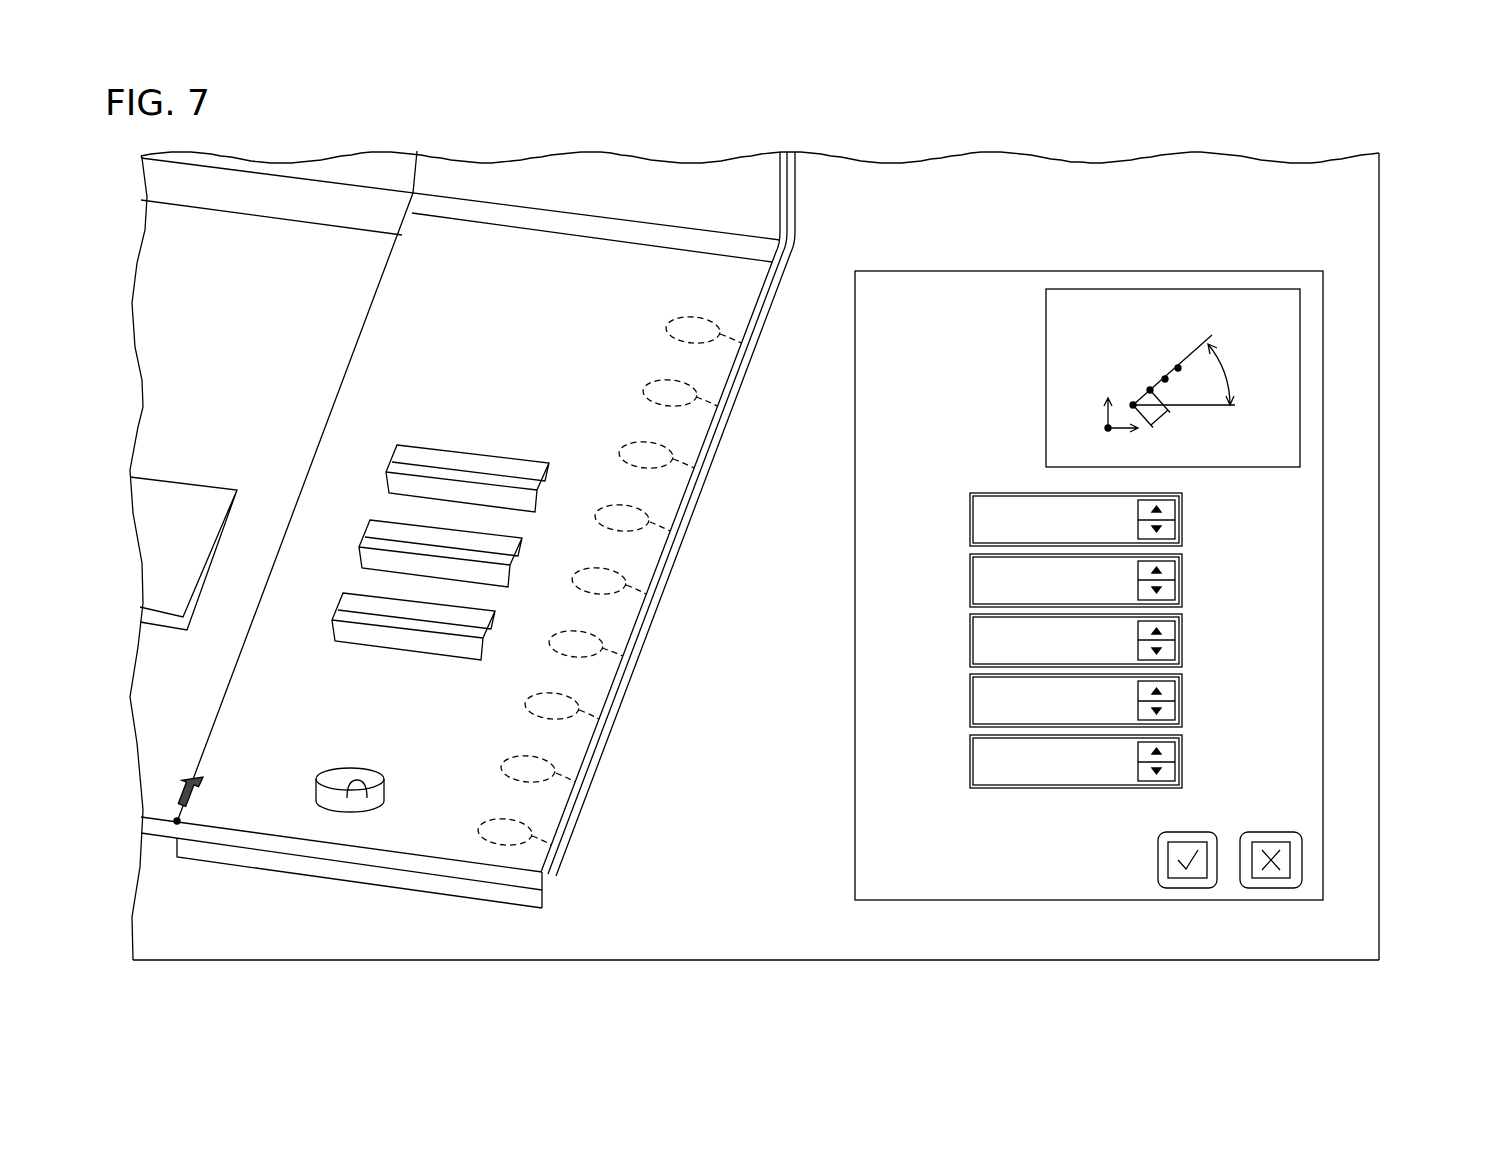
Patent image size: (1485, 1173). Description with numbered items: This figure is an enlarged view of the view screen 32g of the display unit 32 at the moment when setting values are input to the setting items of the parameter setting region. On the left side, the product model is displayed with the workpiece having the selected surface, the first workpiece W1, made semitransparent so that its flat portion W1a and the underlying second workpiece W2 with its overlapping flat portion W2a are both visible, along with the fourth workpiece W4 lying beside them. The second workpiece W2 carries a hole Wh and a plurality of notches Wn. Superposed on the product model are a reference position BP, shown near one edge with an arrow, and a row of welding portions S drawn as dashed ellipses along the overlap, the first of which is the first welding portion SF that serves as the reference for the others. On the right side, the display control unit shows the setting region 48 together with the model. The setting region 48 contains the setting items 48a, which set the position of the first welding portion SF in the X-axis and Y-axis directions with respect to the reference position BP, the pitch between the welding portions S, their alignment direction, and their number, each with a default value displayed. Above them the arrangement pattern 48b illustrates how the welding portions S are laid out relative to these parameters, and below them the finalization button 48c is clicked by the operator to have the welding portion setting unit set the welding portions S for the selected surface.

The display unit 32 is at (1387, 363).
The view screen 32g is at (993, 165).
The setting region 48 is at (1068, 270).
The setting items 48a is at (1004, 492).
The arrangement pattern 48b is at (1238, 288).
The finalization button 48c is at (1187, 880).
The first workpiece W1 is at (550, 737).
The flat portion of the first workpiece W1a is at (630, 563).
The second workpiece W2 is at (373, 312).
The flat portion of the second workpiece W2a is at (458, 886).
The fourth workpiece W4 is at (165, 478).
The notches Wn is at (408, 448).
The hole Wh is at (363, 797).
The welding portions S is at (750, 360).
The first welding portion SF is at (560, 862).
The reference position BP is at (177, 824).